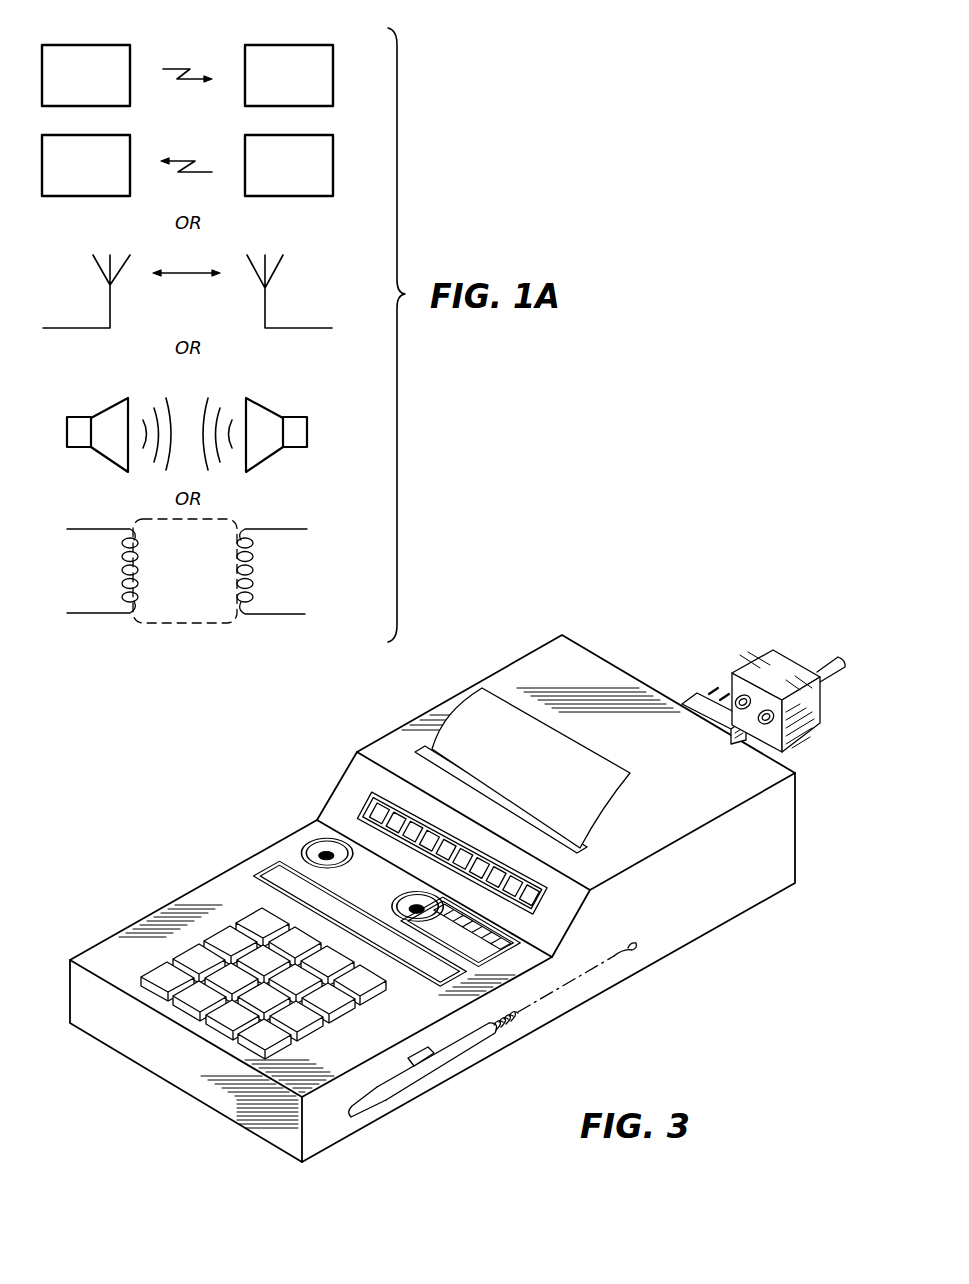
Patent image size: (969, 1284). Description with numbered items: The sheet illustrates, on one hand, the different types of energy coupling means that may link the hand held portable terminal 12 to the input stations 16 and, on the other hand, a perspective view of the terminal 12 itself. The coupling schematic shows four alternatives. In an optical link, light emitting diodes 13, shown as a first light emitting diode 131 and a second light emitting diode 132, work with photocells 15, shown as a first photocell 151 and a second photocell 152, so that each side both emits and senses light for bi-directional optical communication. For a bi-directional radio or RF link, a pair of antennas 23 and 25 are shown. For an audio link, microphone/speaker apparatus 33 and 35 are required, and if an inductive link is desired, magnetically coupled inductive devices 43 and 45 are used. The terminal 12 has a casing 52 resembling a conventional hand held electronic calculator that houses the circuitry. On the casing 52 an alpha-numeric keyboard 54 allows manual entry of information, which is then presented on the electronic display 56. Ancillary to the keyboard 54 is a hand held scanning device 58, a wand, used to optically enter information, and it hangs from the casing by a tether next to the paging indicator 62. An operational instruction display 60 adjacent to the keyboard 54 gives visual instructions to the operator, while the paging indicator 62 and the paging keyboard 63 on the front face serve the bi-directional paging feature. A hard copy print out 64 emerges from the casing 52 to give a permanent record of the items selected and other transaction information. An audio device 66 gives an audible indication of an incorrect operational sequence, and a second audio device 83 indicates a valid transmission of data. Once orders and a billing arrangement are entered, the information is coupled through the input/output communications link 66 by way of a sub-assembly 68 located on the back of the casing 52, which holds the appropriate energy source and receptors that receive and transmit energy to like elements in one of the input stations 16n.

In FIG. 3, the hand held portable terminal 12 is at (457, 885).
In FIG. 1A, the light emitting diodes 13 is at (212, 100).
In FIG. 1A, the light emitting diode 131 is at (116, 44).
In FIG. 1A, the light emitting diode 132 is at (333, 138).
In FIG. 1A, the photocells 15 is at (197, 100).
In FIG. 1A, the photocell 151 is at (310, 44).
In FIG. 1A, the photocell 152 is at (128, 140).
In FIG. 3, the input stations 16 is at (788, 680).
In FIG. 3, the input station 16n is at (803, 662).
In FIG. 1A, the antenna 23 is at (108, 281).
In FIG. 1A, the antenna 25 is at (275, 272).
In FIG. 1A, the microphone/speaker apparatus 33 is at (70, 440).
In FIG. 1A, the microphone/speaker apparatus 35 is at (305, 440).
In FIG. 1A, the inductive device 43 is at (124, 572).
In FIG. 1A, the inductive device 45 is at (251, 572).
In FIG. 3, the casing 52 is at (730, 897).
In FIG. 3, the alpha-numeric keyboard 54 is at (222, 932).
In FIG. 3, the electronic display 56 is at (528, 882).
In FIG. 3, the hand held scanning device 58 is at (450, 1056).
In FIG. 3, the operational instruction display 60 is at (278, 868).
In FIG. 3, the paging indicator 62 is at (530, 972).
In FIG. 3, the keyboard 63 is at (507, 933).
In FIG. 3, the hard copy print out 64 is at (607, 780).
In FIG. 3, the audio device 66 is at (377, 888).
In FIG. 3, the sub-assembly 68 is at (713, 716).
In FIG. 3, the second audio device 83 is at (322, 845).